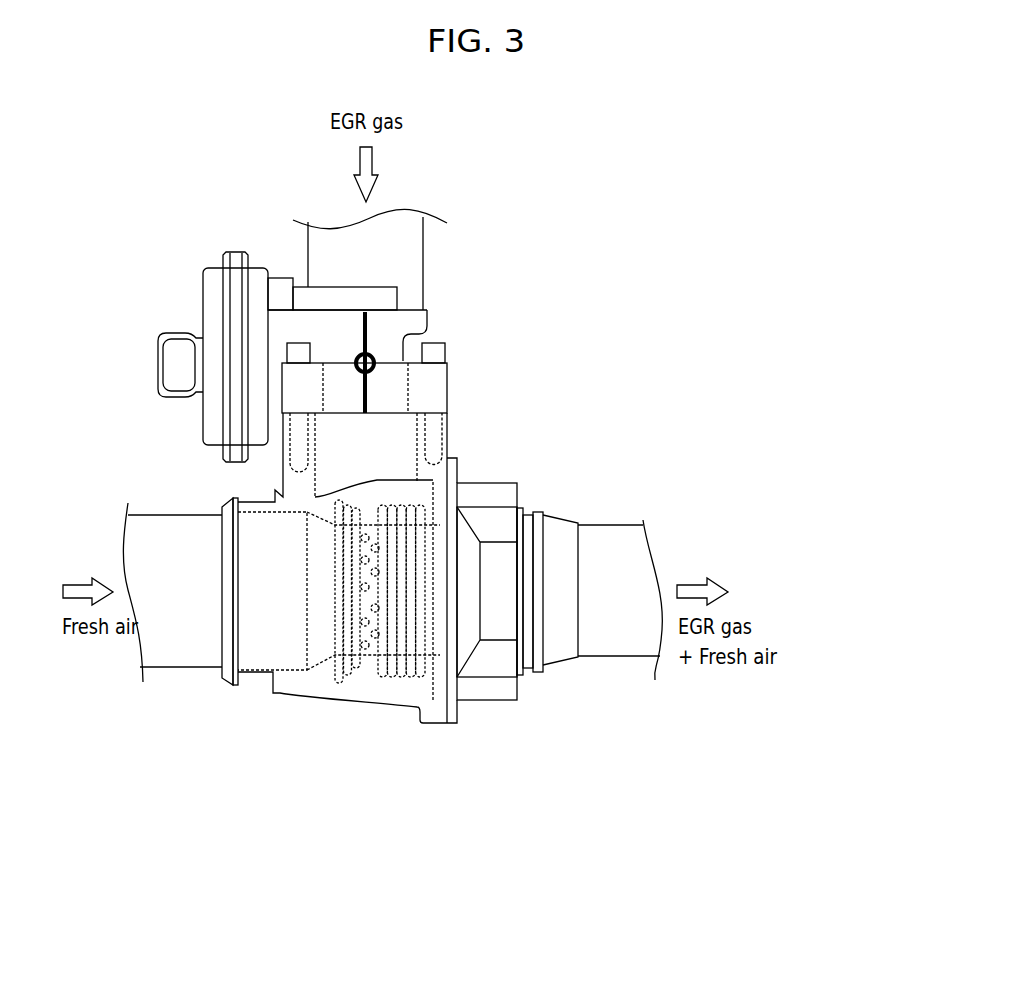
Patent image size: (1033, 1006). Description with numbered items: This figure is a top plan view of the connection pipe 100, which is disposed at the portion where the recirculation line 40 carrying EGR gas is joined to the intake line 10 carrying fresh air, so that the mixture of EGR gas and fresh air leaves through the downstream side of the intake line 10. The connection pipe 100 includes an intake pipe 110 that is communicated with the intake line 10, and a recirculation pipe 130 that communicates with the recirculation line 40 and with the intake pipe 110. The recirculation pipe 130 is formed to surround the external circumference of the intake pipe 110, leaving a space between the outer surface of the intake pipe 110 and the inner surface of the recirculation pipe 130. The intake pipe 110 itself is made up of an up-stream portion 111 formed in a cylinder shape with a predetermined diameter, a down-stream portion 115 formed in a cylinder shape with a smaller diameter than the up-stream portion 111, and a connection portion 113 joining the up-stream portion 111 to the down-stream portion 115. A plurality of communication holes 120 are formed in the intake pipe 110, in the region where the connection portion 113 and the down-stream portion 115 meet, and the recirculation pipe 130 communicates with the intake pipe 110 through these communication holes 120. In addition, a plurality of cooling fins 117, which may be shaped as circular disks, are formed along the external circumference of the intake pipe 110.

The intake line 10 is at (180, 668).
The recirculation line 40 is at (423, 262).
The connection pipe 100 is at (466, 726).
The intake pipe 110 is at (158, 848).
The up-stream portion 111 is at (253, 686).
The connection portion 113 is at (322, 673).
The down-stream portion 115 is at (435, 700).
The cooling fins 117 is at (402, 680).
The communication holes 120 is at (370, 683).
The recirculation pipe 130 is at (293, 693).